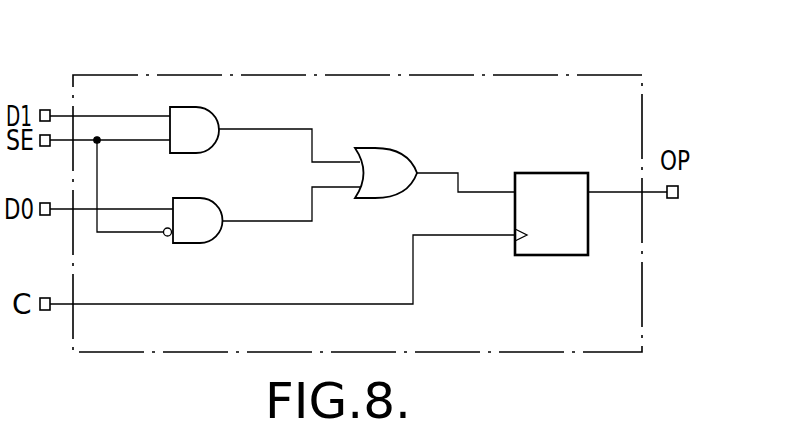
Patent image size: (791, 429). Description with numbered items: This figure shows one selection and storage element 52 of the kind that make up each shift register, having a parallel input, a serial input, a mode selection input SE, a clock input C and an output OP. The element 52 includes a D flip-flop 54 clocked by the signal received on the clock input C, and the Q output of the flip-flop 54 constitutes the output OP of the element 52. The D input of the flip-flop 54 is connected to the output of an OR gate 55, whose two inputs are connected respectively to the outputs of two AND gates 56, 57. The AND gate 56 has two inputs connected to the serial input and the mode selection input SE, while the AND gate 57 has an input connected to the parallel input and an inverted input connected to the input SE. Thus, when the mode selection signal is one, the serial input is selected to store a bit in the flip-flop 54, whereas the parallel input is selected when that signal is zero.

The selection and storage element 52 is at (643, 288).
The D flip-flop 54 is at (565, 256).
The OR gate 55 is at (372, 200).
The AND gate 56 is at (208, 148).
The AND gate 57 is at (215, 236).